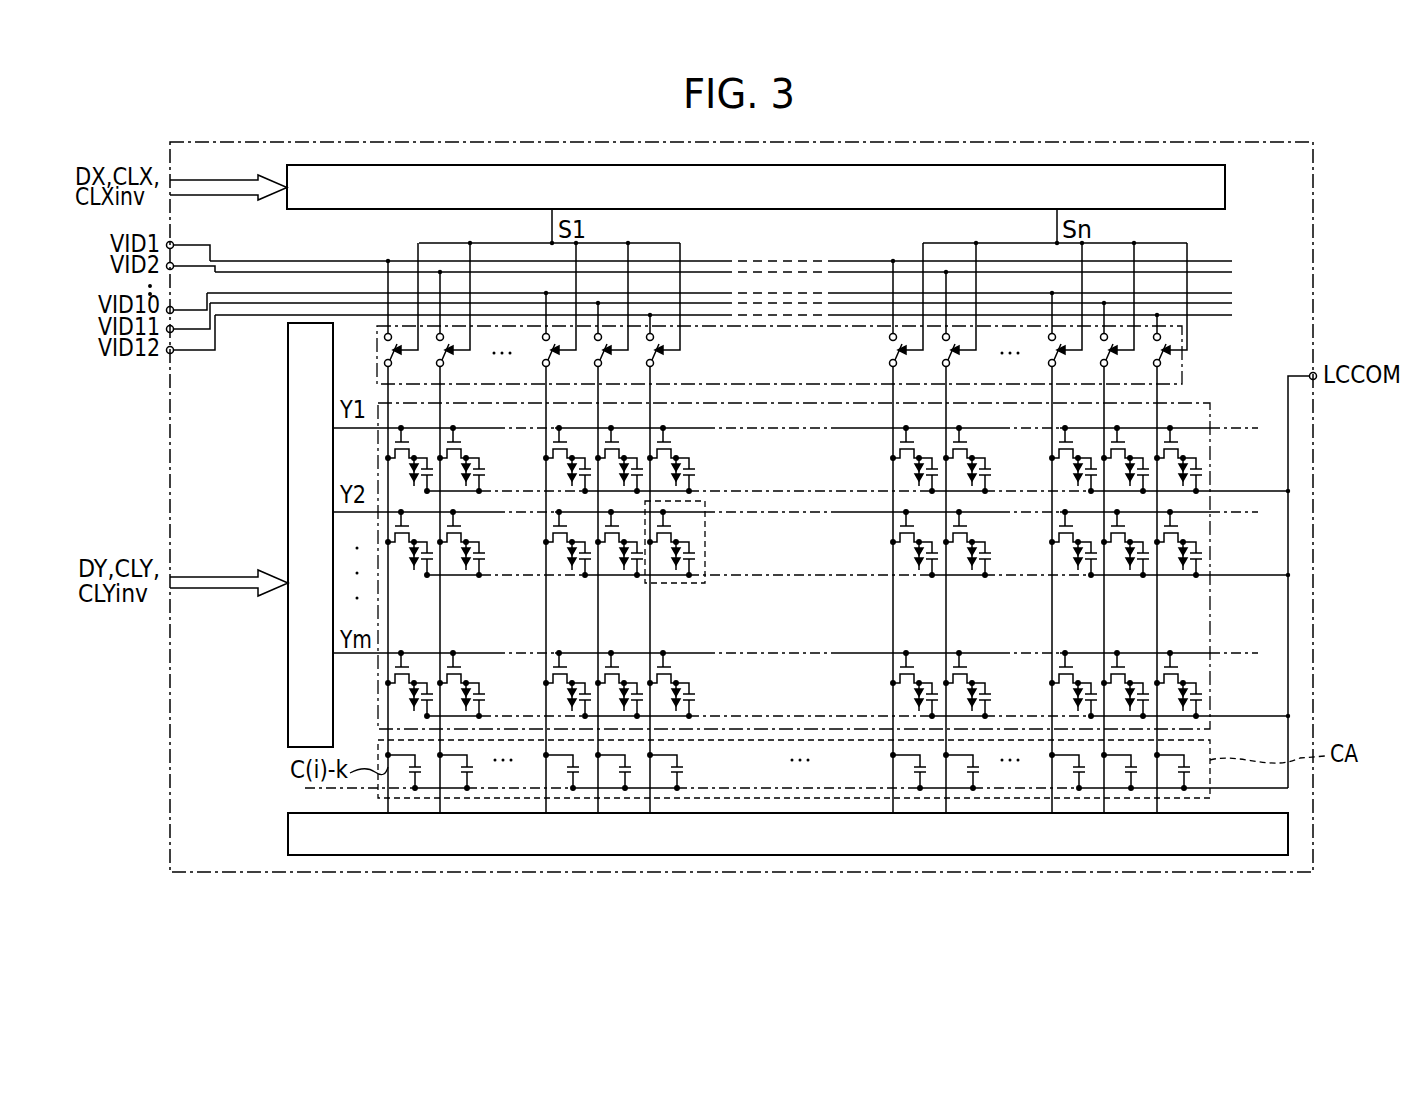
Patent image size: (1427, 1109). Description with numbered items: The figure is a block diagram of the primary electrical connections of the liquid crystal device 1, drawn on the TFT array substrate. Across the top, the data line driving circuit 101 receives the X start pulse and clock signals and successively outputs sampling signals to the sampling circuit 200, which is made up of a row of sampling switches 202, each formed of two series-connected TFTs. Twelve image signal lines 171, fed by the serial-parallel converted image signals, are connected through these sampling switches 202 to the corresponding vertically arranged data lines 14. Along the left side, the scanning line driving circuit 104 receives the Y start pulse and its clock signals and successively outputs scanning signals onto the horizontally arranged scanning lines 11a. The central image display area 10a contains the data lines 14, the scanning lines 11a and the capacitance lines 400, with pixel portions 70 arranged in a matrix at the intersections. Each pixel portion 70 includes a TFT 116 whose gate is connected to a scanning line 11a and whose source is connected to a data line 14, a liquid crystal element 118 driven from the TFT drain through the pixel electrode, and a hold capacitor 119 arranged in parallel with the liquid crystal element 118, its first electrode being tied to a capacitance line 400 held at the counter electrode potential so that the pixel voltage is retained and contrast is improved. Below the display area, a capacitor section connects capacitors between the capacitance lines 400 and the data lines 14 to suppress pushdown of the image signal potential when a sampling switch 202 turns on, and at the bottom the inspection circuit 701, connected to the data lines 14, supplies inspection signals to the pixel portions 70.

The liquid crystal device 1 is at (1227, 132).
The data line driving circuit 101 is at (1225, 183).
The scanning line driving circuit 104 is at (288, 498).
The image signal lines 171 is at (1238, 258).
The sampling circuit 200 is at (1182, 366).
The sampling switch 202 is at (388, 358).
The capacitance lines 400 is at (1288, 449).
The image display area 10a is at (878, 572).
The scanning line 11a is at (850, 515).
The data line 14 is at (652, 629).
The pixel portion 70 is at (715, 542).
The TFT 116 is at (672, 528).
The liquid crystal element 118 is at (677, 560).
The hold capacitor 119 is at (697, 556).
The inspection circuit 701 is at (1288, 832).